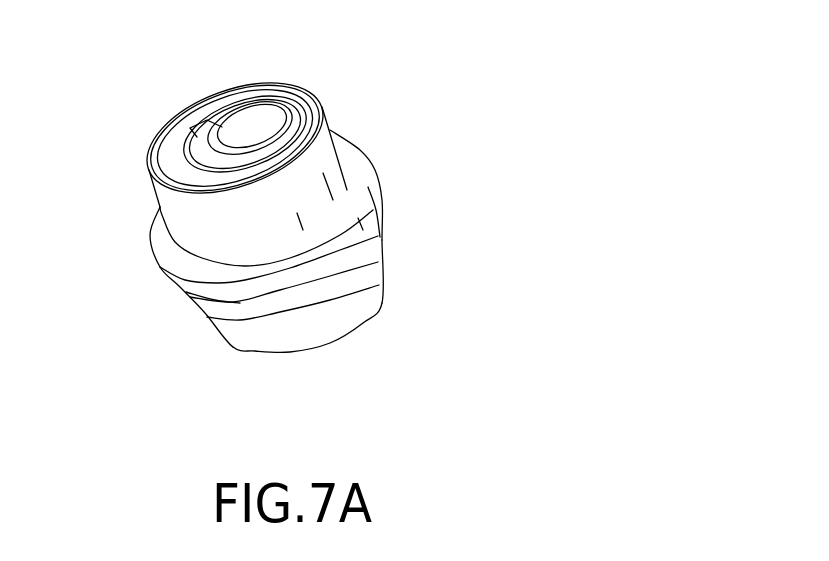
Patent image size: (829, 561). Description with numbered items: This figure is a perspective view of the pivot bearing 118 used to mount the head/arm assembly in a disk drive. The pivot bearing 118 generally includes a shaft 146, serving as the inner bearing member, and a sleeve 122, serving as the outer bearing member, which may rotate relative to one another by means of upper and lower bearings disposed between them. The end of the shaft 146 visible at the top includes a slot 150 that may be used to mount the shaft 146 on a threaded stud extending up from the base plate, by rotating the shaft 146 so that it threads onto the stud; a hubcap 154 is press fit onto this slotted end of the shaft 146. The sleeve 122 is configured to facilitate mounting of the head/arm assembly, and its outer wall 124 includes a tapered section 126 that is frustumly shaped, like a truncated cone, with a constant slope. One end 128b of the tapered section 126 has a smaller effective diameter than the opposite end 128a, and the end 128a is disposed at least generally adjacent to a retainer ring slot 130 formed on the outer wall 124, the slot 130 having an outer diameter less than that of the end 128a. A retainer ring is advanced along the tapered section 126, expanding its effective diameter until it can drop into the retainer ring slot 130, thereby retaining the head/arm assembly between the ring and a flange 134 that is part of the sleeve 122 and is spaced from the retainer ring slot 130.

The pivot bearing 118 is at (407, 93).
The sleeve 122 is at (330, 127).
The outer wall 124 is at (177, 203).
The tapered section 126 is at (383, 270).
The end of tapered section 128a is at (383, 240).
The end of tapered section 128b is at (380, 287).
The retainer ring slot 130 is at (328, 277).
The flange 134 is at (158, 275).
The shaft 146 is at (240, 103).
The slot 150 is at (197, 123).
The hubcap 154 is at (172, 157).